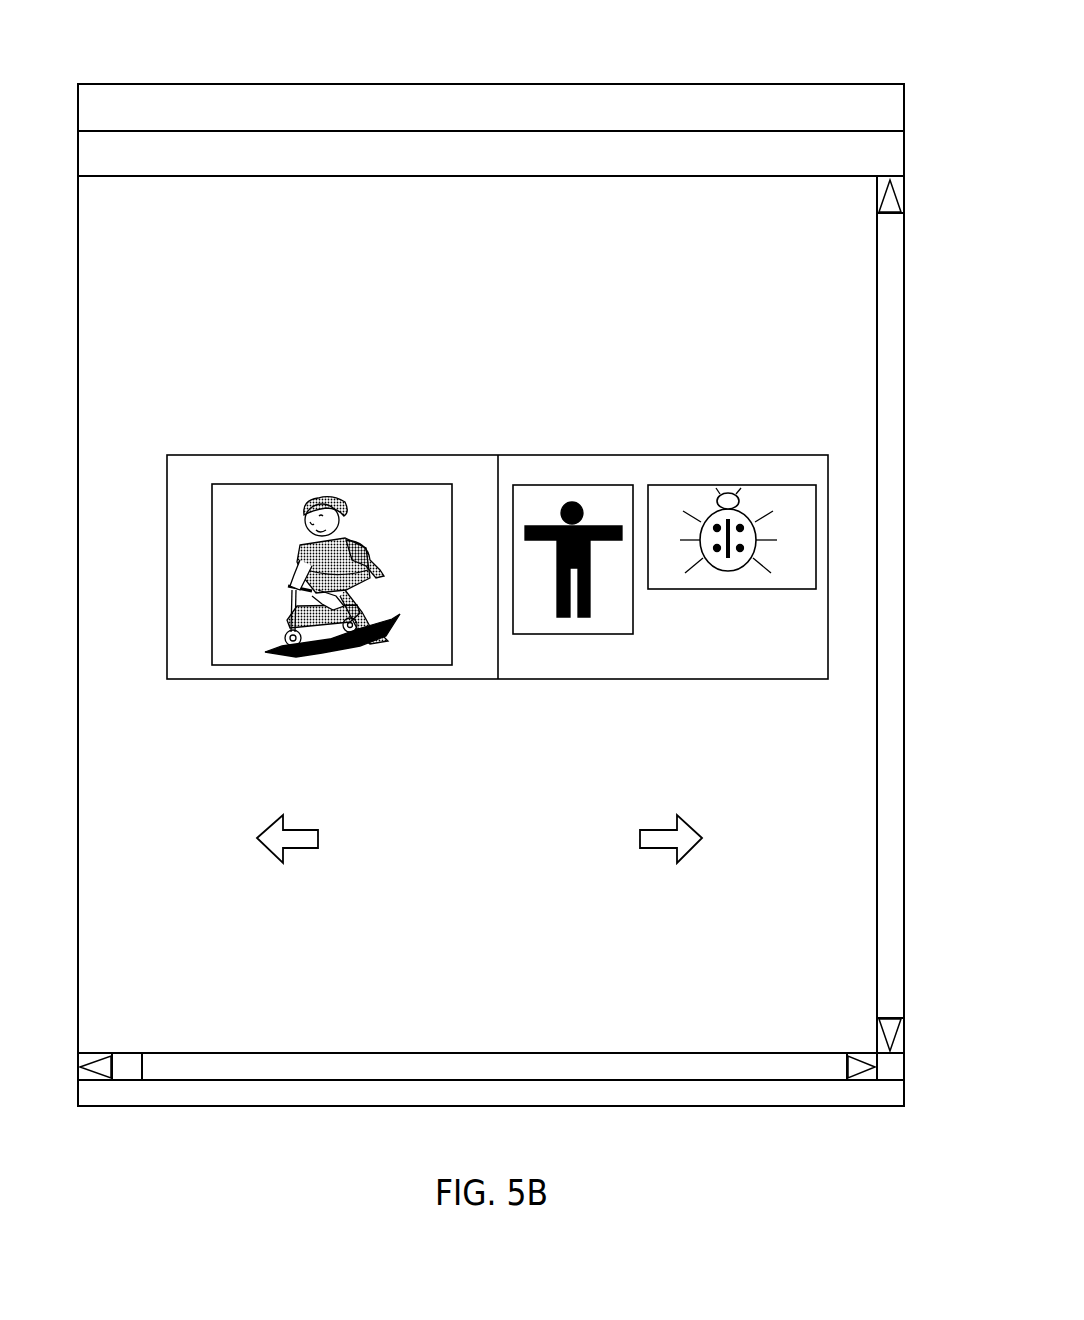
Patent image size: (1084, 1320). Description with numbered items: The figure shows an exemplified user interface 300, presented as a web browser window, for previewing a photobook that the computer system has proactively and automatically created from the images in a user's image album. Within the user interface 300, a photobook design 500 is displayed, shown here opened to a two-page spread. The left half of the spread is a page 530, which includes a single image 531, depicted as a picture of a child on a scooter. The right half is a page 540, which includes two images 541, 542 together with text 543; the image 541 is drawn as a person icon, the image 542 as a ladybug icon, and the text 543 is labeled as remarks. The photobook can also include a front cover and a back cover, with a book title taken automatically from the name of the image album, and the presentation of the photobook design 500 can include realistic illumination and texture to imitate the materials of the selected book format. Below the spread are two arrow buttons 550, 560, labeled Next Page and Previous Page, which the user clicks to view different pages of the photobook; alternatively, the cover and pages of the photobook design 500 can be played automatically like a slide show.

The user interface 300 is at (796, 76).
The photobook design 500 is at (207, 444).
The page 530 is at (378, 468).
The image 531 is at (400, 650).
The page 540 is at (722, 467).
The image 541 is at (605, 620).
The image 542 is at (687, 500).
The text 543 is at (767, 660).
The arrow button 550 is at (705, 817).
The arrow button 560 is at (262, 818).